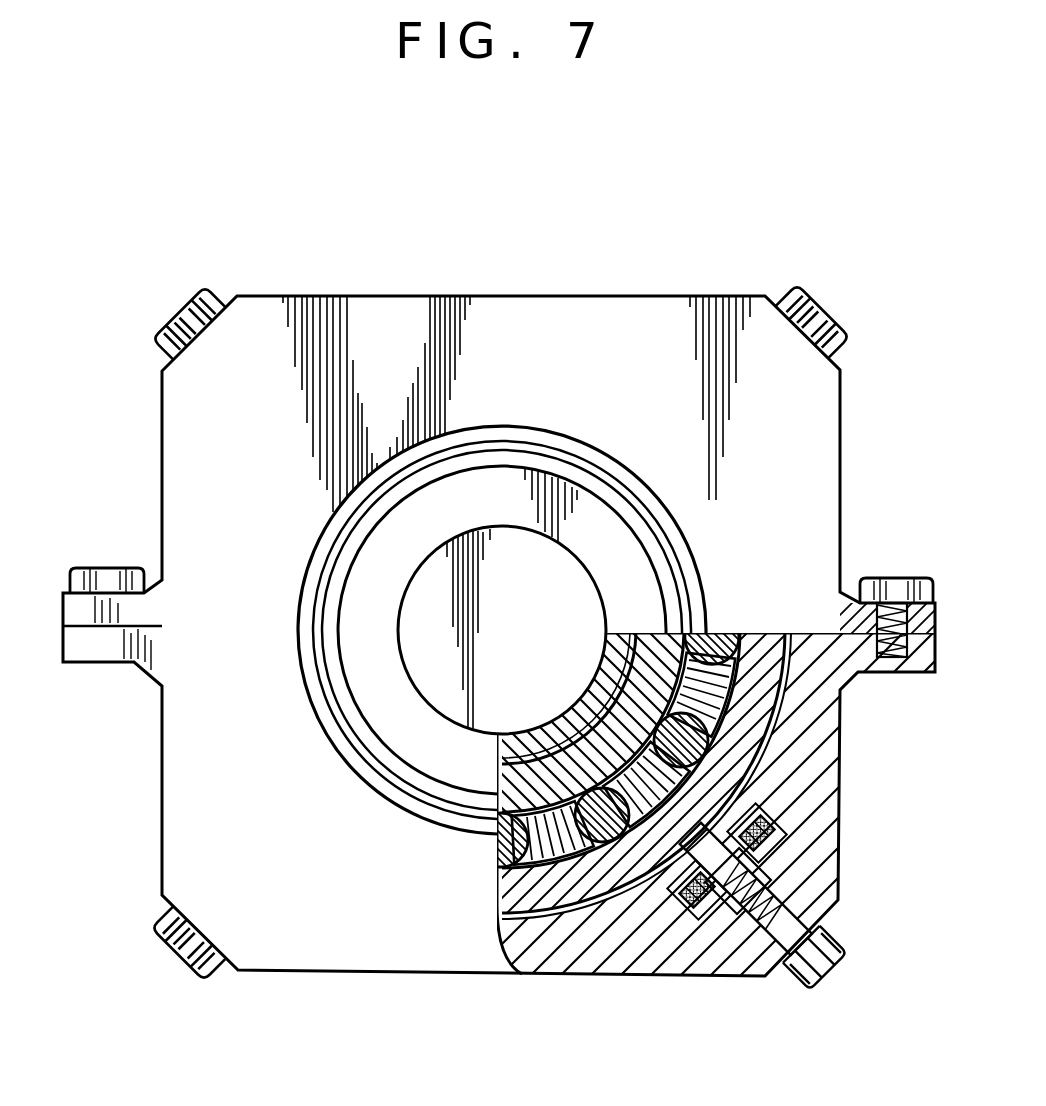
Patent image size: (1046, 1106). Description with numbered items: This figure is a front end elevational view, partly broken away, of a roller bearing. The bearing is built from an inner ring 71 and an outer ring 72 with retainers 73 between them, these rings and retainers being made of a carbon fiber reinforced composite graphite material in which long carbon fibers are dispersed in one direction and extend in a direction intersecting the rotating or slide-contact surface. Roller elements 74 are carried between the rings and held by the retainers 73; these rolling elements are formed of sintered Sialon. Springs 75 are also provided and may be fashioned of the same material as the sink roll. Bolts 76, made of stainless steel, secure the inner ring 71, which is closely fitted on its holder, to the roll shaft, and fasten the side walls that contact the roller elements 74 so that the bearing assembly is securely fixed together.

The inner ring 71 is at (667, 611).
The outer ring 72 is at (520, 892).
The retainers 73 is at (572, 885).
The roller elements 74 is at (616, 842).
The springs 75 is at (690, 887).
The bolts 76 is at (825, 958).